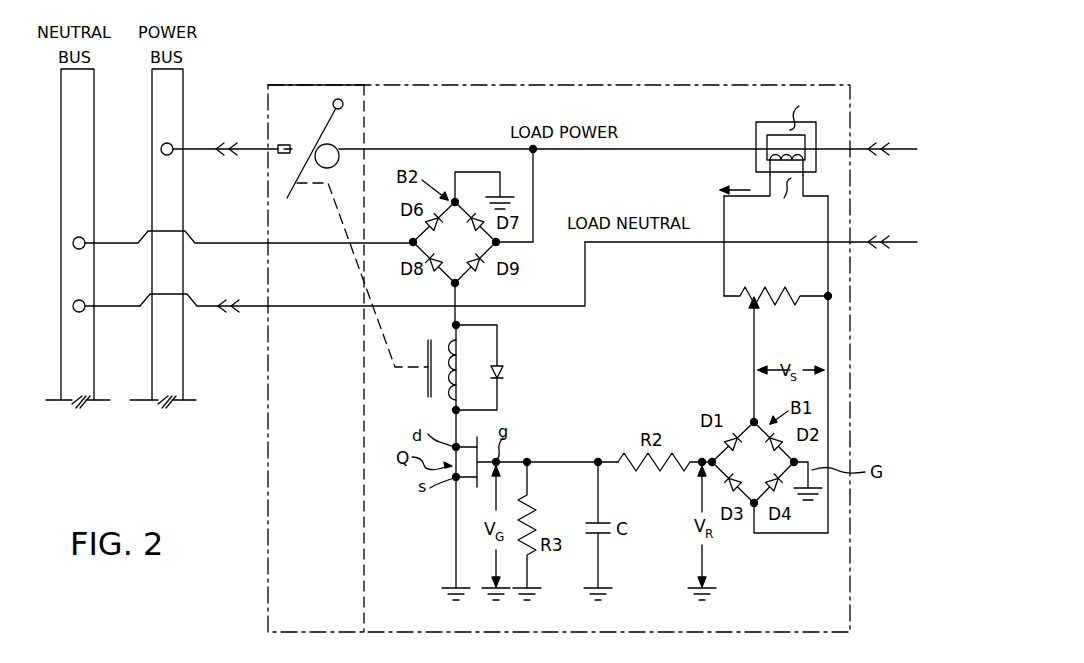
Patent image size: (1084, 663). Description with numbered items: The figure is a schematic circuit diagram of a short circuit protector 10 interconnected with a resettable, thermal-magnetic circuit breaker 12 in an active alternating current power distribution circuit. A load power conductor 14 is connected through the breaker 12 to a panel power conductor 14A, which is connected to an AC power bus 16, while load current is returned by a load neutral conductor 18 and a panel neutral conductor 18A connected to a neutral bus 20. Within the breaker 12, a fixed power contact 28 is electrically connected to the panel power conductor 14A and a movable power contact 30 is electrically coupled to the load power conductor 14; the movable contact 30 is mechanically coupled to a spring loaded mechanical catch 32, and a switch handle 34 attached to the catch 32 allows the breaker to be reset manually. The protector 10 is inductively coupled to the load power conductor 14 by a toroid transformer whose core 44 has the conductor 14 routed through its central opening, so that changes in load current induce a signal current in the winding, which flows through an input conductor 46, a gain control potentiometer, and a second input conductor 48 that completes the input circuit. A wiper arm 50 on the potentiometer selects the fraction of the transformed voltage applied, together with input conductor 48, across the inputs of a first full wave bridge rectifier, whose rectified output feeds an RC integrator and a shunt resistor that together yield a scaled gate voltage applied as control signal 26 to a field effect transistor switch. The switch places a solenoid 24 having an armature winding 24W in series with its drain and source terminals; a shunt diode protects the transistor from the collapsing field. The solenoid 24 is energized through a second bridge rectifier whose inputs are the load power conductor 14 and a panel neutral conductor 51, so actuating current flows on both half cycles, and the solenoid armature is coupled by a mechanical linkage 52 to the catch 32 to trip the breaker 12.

The short circuit protector 10 is at (616, 84).
The resettable thermal-magnetic circuit breaker 12 is at (306, 86).
The load power conductor 14 is at (653, 150).
The panel power conductor 14A is at (190, 149).
The AC power bus 16 is at (183, 85).
The load neutral conductor 18 is at (645, 243).
The panel neutral conductor 18A is at (200, 305).
The neutral bus 20 is at (93, 102).
The solenoid 24 is at (471, 368).
The armature winding 24W is at (460, 357).
The control signal 26 is at (515, 462).
The fixed power contact 28 is at (294, 152).
The movable power contact 30 is at (292, 140).
The spring loaded mechanical catch 32 is at (323, 143).
The switch handle 34 is at (344, 104).
The toroid transformer core 44 is at (752, 142).
The input conductor 46 is at (710, 290).
The input conductor 48 is at (830, 326).
The wiper arm 50 is at (754, 361).
The panel neutral conductor 51 is at (207, 243).
The mechanical linkage 52 is at (336, 220).